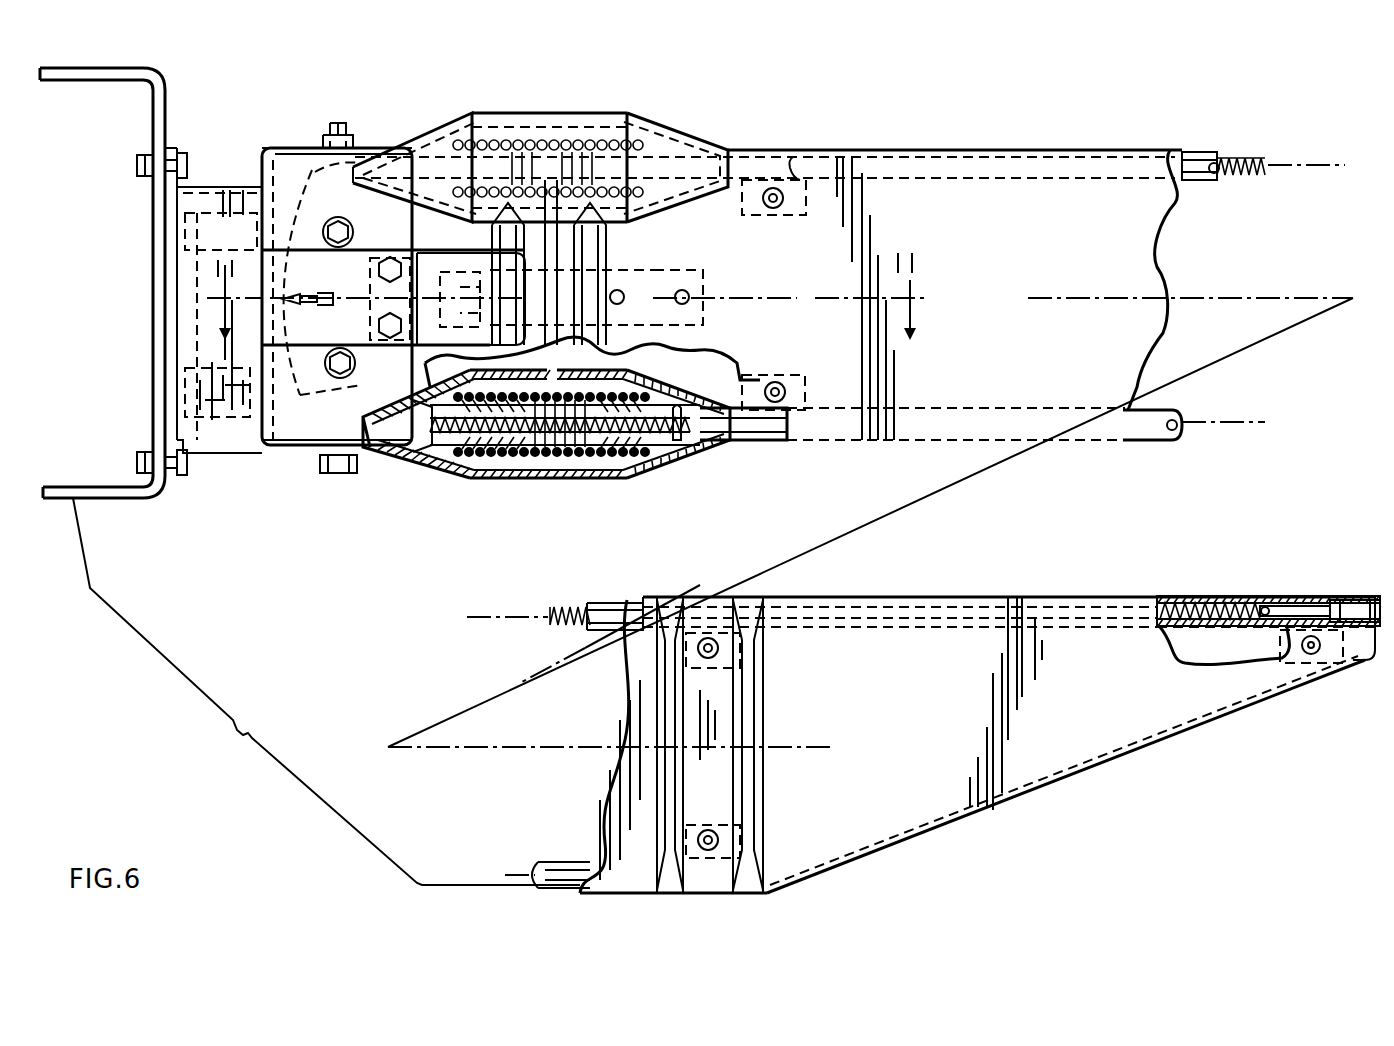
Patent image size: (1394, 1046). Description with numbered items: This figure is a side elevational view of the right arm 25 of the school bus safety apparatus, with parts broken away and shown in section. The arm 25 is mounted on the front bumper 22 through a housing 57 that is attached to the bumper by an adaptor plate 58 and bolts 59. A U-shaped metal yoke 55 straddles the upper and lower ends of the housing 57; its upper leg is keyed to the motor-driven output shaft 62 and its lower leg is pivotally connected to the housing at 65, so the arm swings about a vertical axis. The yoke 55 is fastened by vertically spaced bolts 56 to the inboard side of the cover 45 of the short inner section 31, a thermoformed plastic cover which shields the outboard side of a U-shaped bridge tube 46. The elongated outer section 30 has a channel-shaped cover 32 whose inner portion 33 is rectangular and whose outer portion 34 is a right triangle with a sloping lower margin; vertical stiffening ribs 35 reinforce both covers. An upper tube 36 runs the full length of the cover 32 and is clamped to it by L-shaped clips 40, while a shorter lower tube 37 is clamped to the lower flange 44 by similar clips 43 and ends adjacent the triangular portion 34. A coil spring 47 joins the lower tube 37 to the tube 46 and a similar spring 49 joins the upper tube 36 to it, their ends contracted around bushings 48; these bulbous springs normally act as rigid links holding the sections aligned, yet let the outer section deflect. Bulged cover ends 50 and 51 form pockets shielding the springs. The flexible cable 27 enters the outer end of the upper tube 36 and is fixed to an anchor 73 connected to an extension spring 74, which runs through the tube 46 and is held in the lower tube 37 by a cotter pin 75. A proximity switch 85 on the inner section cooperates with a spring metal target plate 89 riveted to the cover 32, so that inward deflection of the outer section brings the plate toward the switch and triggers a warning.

The front bumper 22 is at (167, 117).
The right arm 25 is at (712, 136).
The flexible line 27 is at (1340, 598).
The outer section 30 is at (1100, 149).
The inner section 31 is at (297, 150).
The cover 32 is at (970, 200).
The inner portion 33 is at (1130, 257).
The outer portion 34 is at (1070, 743).
The stiffening ribs 35 is at (600, 253).
The upper tube 36 is at (1197, 153).
The lower tube 37 is at (1157, 440).
The retaining clips 40 is at (797, 172).
The retaining clips 43 is at (730, 370).
The lower flange 44 is at (770, 440).
The cover 45 is at (293, 428).
The U-shaped guide tube 46 is at (183, 405).
The coil spring 47 is at (583, 470).
The bushings 48 is at (467, 463).
The spring 49 is at (593, 130).
The bulged end portion 50 is at (647, 120).
The bulged end portion 51 is at (510, 113).
The yoke 55 is at (370, 142).
The bolts 56 is at (352, 225).
The housing 57 is at (183, 358).
The adaptor plate 58 is at (172, 218).
The bolts 59 is at (187, 167).
The output shaft 62 is at (343, 110).
The pivotal connection 65 is at (332, 468).
The anchor 73 is at (1270, 602).
The extension spring 74 is at (537, 453).
The cotter pin 75 is at (680, 440).
The proximity switch 85 is at (347, 317).
The target plate 89 is at (668, 266).